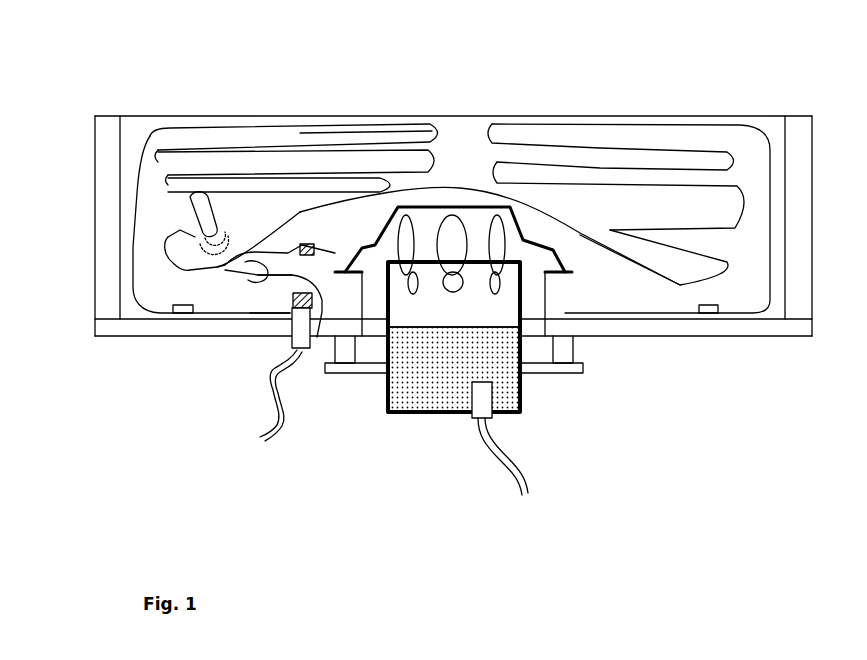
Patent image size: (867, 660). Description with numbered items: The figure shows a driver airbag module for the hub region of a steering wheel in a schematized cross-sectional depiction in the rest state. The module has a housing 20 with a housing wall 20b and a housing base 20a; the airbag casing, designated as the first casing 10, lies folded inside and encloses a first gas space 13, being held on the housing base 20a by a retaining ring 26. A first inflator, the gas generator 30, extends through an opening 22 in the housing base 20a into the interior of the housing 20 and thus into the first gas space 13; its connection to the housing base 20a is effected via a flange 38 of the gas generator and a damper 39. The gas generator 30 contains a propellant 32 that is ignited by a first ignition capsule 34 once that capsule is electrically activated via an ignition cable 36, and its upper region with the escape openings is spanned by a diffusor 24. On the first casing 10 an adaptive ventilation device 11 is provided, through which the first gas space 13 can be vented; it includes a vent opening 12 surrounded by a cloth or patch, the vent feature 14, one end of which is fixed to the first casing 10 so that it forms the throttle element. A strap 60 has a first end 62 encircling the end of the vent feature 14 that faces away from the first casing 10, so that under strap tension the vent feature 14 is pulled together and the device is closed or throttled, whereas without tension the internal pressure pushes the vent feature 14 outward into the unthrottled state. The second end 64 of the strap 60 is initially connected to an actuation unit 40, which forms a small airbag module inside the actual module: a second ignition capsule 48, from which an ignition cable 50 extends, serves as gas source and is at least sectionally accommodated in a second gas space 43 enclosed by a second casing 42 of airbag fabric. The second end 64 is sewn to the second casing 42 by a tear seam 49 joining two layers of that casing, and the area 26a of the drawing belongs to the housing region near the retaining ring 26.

The first casing 10 is at (592, 118).
The adaptive ventilation device 11 is at (206, 228).
The vent opening 12 is at (200, 230).
The first gas space 13 is at (266, 133).
The vent feature 14 is at (197, 232).
The housing 20 is at (106, 326).
The housing base 20a is at (747, 330).
The housing wall 20b is at (105, 168).
The opening 22 is at (537, 327).
The diffusor 24 is at (493, 206).
The retaining ring 26 is at (178, 316).
The glove 26a is at (645, 295).
The gas generator 30 is at (418, 333).
The propellant 32 is at (437, 382).
The first ignition capsule 34 is at (484, 398).
The ignition cable 36 is at (497, 460).
The flange 38 is at (565, 372).
The damper 39 is at (576, 352).
The actuation unit 40 is at (279, 300).
The second casing 42 is at (265, 274).
The second gas space 43 is at (273, 290).
The second ignition capsule 48 is at (288, 360).
The tear seam 49 is at (306, 250).
The ignition cable 50 is at (290, 377).
The strap 60 is at (255, 268).
The first end 62 is at (188, 232).
The second end 64 is at (304, 247).